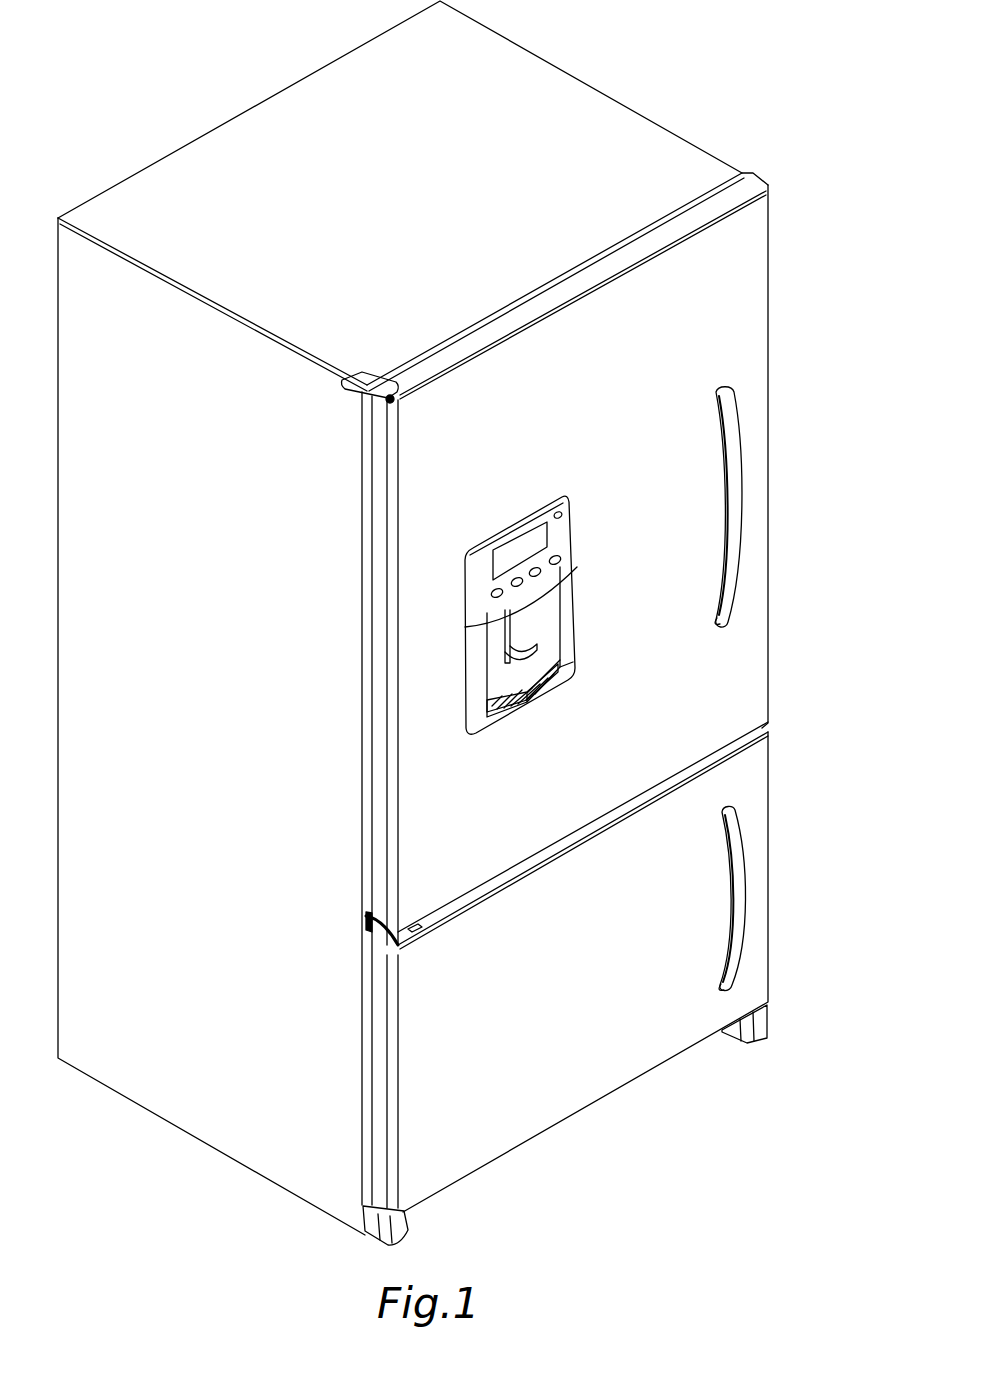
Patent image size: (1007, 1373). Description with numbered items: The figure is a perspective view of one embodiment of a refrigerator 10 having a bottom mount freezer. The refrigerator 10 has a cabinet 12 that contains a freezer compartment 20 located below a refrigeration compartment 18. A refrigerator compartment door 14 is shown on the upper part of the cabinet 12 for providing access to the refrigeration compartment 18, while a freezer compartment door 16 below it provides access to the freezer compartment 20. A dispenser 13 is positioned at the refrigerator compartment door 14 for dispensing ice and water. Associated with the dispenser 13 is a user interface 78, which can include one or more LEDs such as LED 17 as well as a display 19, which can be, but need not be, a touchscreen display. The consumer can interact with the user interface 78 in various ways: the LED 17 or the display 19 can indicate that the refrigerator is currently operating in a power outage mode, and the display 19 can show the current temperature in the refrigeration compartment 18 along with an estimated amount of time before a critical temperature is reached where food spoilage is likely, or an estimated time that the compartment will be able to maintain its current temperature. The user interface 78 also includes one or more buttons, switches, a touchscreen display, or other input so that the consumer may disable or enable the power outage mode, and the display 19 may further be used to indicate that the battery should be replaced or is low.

The refrigerator 10 is at (623, 37).
The cabinet 12 is at (608, 118).
The dispenser 13 is at (503, 521).
The refrigerator compartment door 14 is at (758, 332).
The freezer compartment door 16 is at (757, 827).
The LED 17 is at (485, 560).
The refrigeration compartment 18 is at (663, 277).
The display 19 is at (542, 532).
The freezer compartment 20 is at (675, 805).
The user interface 78 is at (567, 550).